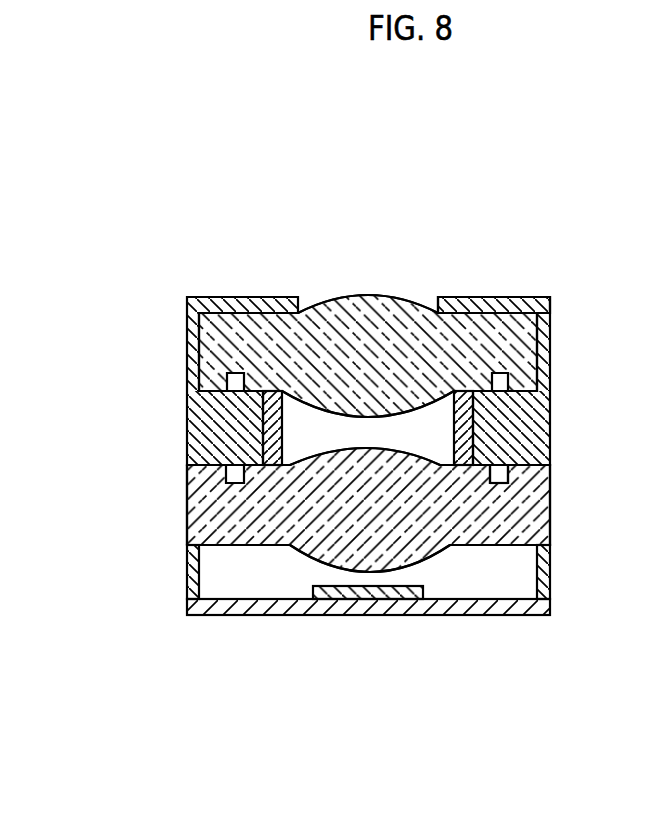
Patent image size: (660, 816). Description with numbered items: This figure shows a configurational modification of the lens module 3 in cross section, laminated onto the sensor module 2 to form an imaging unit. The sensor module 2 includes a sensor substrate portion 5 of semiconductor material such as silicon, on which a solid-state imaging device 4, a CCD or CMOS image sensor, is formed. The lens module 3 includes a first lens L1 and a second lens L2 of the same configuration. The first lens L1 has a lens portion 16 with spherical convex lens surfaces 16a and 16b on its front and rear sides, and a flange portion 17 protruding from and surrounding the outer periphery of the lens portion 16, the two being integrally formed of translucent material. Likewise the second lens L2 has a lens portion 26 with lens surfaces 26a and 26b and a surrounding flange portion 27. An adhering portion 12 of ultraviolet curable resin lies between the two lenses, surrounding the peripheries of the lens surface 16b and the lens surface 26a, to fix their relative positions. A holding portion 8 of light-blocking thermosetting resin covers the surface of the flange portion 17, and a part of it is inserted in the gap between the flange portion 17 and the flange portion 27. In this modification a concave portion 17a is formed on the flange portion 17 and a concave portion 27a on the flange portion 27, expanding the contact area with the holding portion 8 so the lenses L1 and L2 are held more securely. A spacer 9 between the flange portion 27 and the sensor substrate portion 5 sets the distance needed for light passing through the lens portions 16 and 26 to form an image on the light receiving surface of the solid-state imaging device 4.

The sensor module 2 is at (178, 611).
The lens module 3 is at (77, 372).
The solid-state imaging device 4 is at (424, 593).
The sensor substrate portion 5 is at (483, 616).
The holding portion 8 is at (537, 413).
The spacer 9 is at (550, 574).
The adhering portion 12 is at (463, 423).
The lens portion 16 is at (387, 330).
The lens surface 16a is at (360, 296).
The lens surface 16b is at (350, 419).
The flange portion 17 is at (482, 319).
The concave portion 17a is at (503, 330).
The lens portion 26 is at (290, 547).
The lens surface 26a is at (370, 447).
The lens surface 26b is at (352, 570).
The flange portion 27 is at (534, 512).
The concave portion 27a is at (503, 483).
The first lens L1 is at (178, 345).
The second lens L2 is at (178, 492).